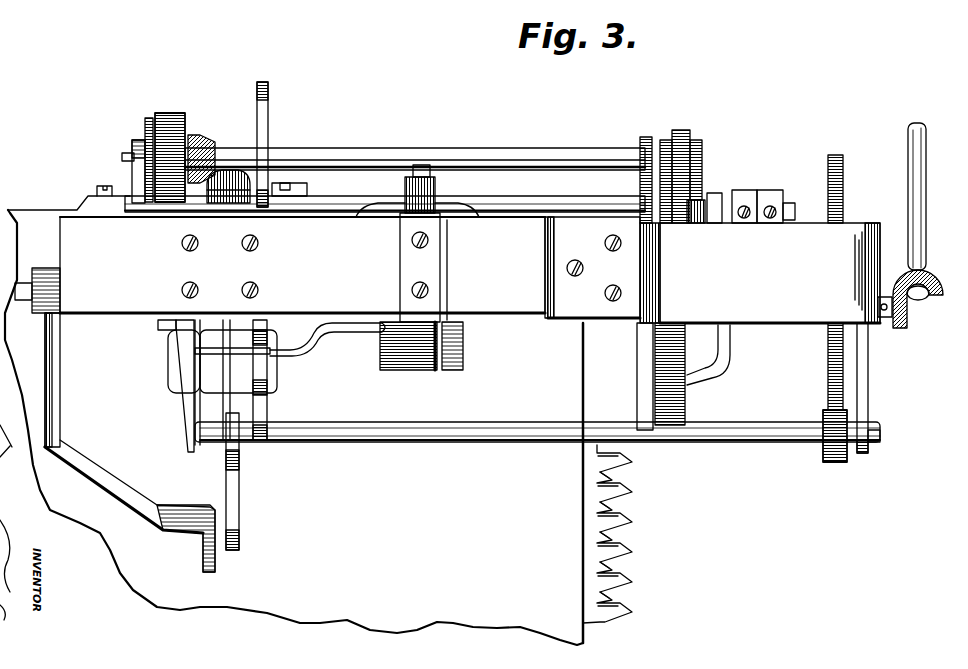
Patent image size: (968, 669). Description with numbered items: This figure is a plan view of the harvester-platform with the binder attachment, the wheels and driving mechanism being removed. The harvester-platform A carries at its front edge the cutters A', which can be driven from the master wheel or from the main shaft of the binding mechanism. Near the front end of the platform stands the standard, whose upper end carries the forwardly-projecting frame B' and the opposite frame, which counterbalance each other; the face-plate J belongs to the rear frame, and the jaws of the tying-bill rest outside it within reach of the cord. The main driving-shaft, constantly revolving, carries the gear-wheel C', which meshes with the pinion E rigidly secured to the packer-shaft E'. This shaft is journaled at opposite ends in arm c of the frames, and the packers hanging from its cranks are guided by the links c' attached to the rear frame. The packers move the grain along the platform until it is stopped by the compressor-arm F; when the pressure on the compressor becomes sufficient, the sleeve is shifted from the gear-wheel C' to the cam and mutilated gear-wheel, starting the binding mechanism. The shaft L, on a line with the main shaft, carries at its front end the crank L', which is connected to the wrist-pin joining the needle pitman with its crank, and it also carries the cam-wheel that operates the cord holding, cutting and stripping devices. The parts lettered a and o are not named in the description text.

The harvester-platform A is at (294, 415).
The cutters A' is at (618, 534).
The face-plate J is at (52, 395).
The forwardly-projecting frame B' is at (770, 273).
The crank L' is at (415, 147).
The compressor-arm F is at (270, 145).
The crank handle a is at (910, 225).
The arm c is at (527, 386).
The gear-wheel C' is at (740, 292).
The pinion E is at (817, 431).
The packer-shaft E' is at (537, 420).
The loop o is at (172, 365).
The links c' is at (290, 382).